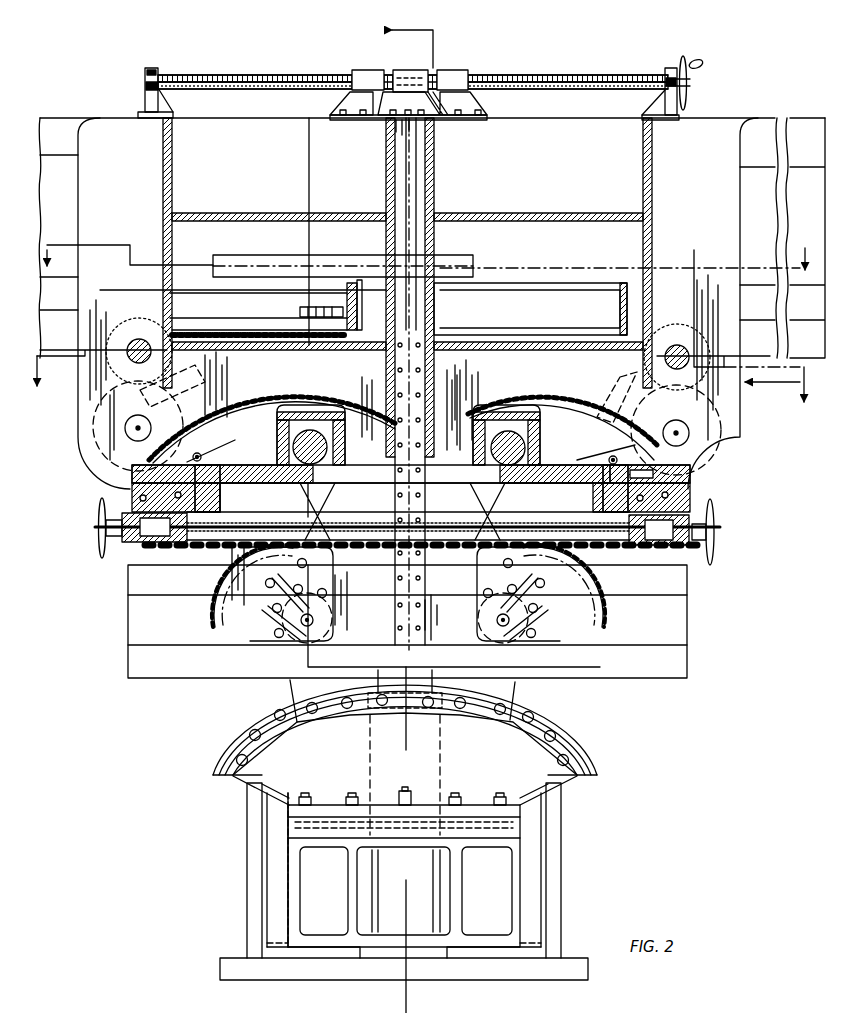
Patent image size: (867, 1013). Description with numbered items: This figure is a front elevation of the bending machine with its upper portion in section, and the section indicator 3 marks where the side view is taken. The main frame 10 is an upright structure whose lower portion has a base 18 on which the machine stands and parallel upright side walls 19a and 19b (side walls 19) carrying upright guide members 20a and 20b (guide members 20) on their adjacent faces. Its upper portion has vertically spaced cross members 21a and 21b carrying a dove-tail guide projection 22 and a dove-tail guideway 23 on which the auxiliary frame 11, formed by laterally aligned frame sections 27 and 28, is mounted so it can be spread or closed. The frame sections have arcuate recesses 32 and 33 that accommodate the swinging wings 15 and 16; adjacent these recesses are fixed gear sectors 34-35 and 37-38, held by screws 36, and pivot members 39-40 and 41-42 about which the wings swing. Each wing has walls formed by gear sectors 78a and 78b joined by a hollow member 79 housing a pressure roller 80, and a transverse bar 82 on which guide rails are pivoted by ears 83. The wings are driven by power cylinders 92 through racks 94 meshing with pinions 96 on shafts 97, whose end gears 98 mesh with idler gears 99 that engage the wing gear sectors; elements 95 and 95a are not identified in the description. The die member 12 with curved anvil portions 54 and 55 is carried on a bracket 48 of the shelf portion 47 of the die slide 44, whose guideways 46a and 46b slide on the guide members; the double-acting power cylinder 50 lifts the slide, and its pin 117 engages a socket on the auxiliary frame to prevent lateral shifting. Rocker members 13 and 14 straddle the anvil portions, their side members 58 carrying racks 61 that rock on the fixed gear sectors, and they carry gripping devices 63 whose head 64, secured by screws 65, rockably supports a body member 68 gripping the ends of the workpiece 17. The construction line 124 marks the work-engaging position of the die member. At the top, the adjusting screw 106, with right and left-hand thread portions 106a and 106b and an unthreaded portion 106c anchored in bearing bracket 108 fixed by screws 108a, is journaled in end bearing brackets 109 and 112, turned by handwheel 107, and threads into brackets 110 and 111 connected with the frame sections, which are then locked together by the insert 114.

The section line 3- 3 is at (392, 516).
The main frame 10 is at (567, 830).
The auxiliary frame 11 is at (772, 387).
The die member 12 is at (496, 540).
The rocker member 13 is at (258, 467).
The rocker member 14 is at (572, 467).
The swinging wing 15 is at (250, 417).
The swinging wing 16 is at (551, 415).
The workpiece 17 is at (541, 525).
The base 18 is at (538, 977).
The frame member 19 is at (430, 366).
The upright side wall 19a is at (250, 860).
The upright side wall 19b is at (558, 862).
The frame member 20 is at (426, 269).
The upright guide member 20a is at (265, 893).
The upright guide member 20b is at (546, 884).
The cross member 21a is at (770, 127).
The cross member 21b is at (690, 582).
The guide projection 22 is at (768, 178).
The guideway 23 is at (690, 628).
The frame section 27 is at (88, 219).
The frame section 28 is at (733, 240).
The recess 32 is at (286, 410).
The recess 33 is at (597, 410).
The gear sectors 34-35 is at (240, 598).
The screws 36 is at (300, 588).
The gear sectors 37-38 is at (604, 606).
The pivot members 39-40 is at (238, 651).
The pivot members 41-42 is at (560, 665).
The die slide 44 is at (460, 881).
The upright guideway 46a is at (277, 914).
The upright guideway 46b is at (533, 913).
The shelf portion 47 is at (342, 832).
The bracket 48 is at (267, 774).
The power cylinder 50 is at (440, 777).
The curved anvil portion 54 is at (228, 722).
The curved anvil portion 55 is at (595, 731).
The side member 58 is at (333, 504).
The rack 61 is at (240, 549).
The work-gripping device 63 is at (716, 518).
The head 64 is at (118, 490).
The screws 65 is at (220, 490).
The body member 68 is at (205, 516).
The gear sector 78a is at (302, 404).
The gear sector 78b is at (520, 409).
The hollow member 79 is at (314, 417).
The pressure roller 80 is at (312, 440).
The bar 82 is at (232, 442).
The ears 83 is at (202, 452).
The power cylinder 92 is at (592, 300).
The rack 94 is at (263, 343).
The rack 95 is at (190, 300).
The rod 95a is at (346, 262).
The pinion 96 is at (128, 374).
The shaft 97 is at (128, 362).
The gear 98 is at (126, 340).
The idler gear 99 is at (85, 436).
The adjusting screw 106 is at (549, 80).
The thread portion 106a is at (228, 78).
The thread portion 106b is at (606, 78).
The unthreaded intermediate portion 106c is at (410, 70).
The handwheel 107 is at (689, 86).
The bearing bracket 108 is at (430, 70).
The screws 108a is at (398, 122).
The bearing bracket 109 is at (155, 68).
The threaded bracket 110 is at (362, 70).
The threaded bracket 111 is at (456, 72).
The bearing bracket 112 is at (670, 68).
The connecting strip 114 is at (415, 511).
The pin 117 is at (410, 792).
The construction line 124 is at (235, 580).